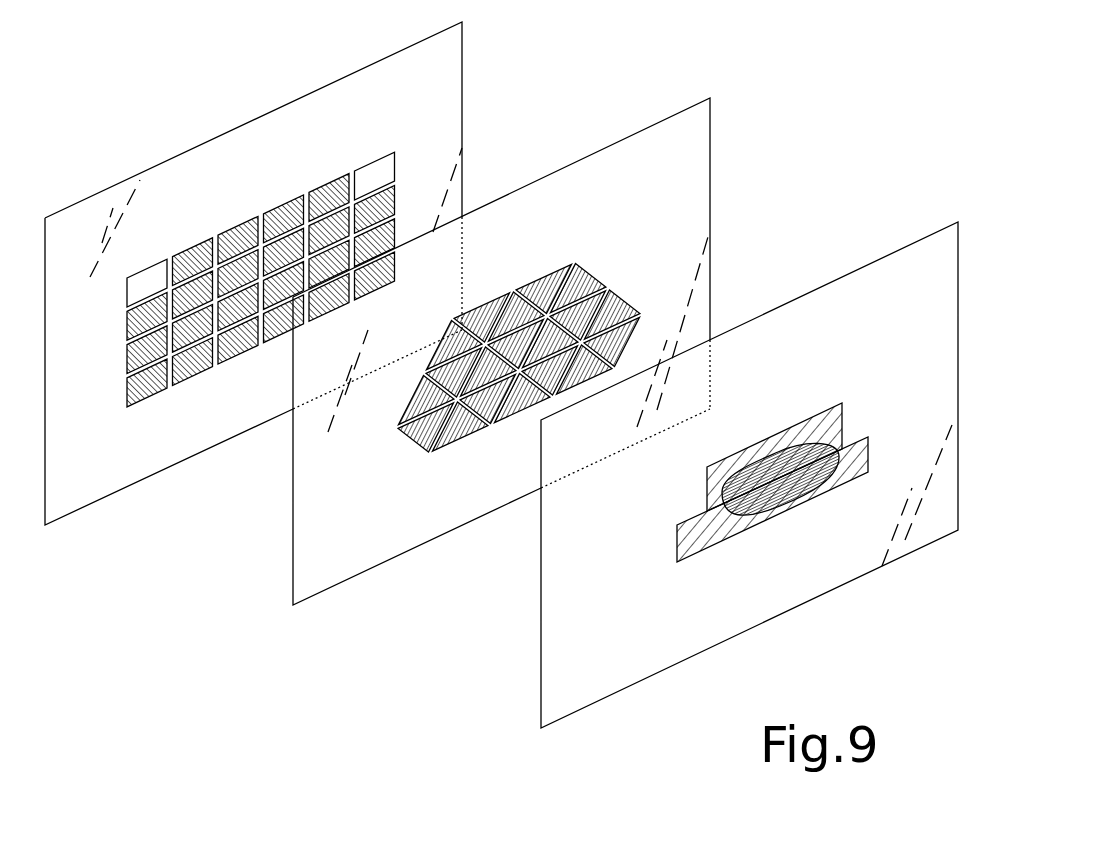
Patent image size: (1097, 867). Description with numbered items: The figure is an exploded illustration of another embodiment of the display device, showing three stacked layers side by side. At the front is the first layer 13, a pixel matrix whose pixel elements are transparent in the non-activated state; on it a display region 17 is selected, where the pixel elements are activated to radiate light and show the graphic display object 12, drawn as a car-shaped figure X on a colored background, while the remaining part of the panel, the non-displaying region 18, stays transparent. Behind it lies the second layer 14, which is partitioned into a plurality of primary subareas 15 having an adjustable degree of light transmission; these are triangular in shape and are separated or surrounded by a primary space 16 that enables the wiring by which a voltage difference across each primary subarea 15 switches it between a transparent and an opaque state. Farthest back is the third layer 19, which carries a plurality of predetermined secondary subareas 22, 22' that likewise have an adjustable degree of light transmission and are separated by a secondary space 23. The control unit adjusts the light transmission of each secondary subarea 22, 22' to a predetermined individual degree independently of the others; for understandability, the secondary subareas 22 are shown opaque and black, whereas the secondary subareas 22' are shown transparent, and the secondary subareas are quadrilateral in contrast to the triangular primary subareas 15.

The graphic display object 12 is at (775, 550).
The first layer 13 is at (890, 270).
The second layer 14 is at (692, 162).
The primary subarea 15 is at (600, 270).
The primary space 16 is at (586, 325).
The display region 17 is at (771, 519).
The non-displaying region 18 is at (501, 370).
The third layer 19 is at (313, 92).
The secondary subarea 22 is at (261, 273).
The secondary subarea 22' is at (292, 208).
The secondary space 23 is at (292, 308).
The figure X is at (797, 487).